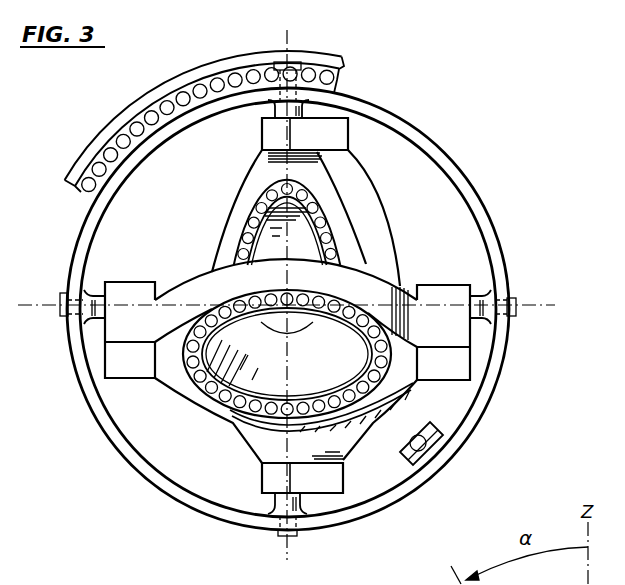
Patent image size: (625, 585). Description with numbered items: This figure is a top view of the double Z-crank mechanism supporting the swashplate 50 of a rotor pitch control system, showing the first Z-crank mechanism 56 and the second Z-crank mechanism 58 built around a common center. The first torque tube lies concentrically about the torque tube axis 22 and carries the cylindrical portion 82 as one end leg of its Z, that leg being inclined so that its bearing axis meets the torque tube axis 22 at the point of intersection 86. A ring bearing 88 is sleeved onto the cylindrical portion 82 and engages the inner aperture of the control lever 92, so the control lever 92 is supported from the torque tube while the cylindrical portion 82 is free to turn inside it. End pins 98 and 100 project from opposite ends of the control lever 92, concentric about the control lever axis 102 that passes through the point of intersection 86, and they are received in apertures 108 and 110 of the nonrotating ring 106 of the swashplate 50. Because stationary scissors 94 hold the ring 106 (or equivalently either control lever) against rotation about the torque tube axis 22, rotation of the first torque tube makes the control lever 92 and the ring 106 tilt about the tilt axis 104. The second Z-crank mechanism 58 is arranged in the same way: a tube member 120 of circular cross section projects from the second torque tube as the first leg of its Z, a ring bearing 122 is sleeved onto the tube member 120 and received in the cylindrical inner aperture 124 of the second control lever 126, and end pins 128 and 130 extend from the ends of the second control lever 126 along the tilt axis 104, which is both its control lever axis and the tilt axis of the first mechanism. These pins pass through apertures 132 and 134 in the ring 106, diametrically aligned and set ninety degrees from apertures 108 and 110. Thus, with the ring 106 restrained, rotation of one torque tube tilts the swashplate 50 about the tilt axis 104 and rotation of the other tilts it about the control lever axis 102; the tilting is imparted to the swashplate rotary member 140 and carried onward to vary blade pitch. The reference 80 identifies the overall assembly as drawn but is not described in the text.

The torque tube axis 22 is at (288, 307).
The swashplate 50 is at (237, 106).
The first Z-crank mechanism 56 is at (356, 184).
The second Z-crank mechanism 58 is at (471, 350).
The gimbal support assembly 80 is at (346, 309).
The cylindrical portion 82 is at (242, 228).
The point of intersection 86 is at (288, 305).
The ring bearing 88 is at (247, 210).
The control lever 92 is at (375, 222).
The stationary scissors 94 is at (443, 433).
The end pin 98 is at (277, 103).
The end pin 100 is at (307, 500).
The control lever axis 102 is at (290, 33).
The tilt axis 104 is at (516, 313).
The nonrotating ring 106 is at (527, 188).
The aperture 108 is at (273, 53).
The aperture 110 is at (280, 543).
The tube member 120 is at (257, 383).
The ring bearing 122 is at (390, 393).
The cylindrical inner aperture 124 is at (207, 393).
The second control lever 126 is at (452, 298).
The end pin 128 is at (93, 303).
The end pin 130 is at (482, 293).
The aperture 132 is at (67, 287).
The aperture 134 is at (500, 323).
The swashplate rotary member 140 is at (130, 110).